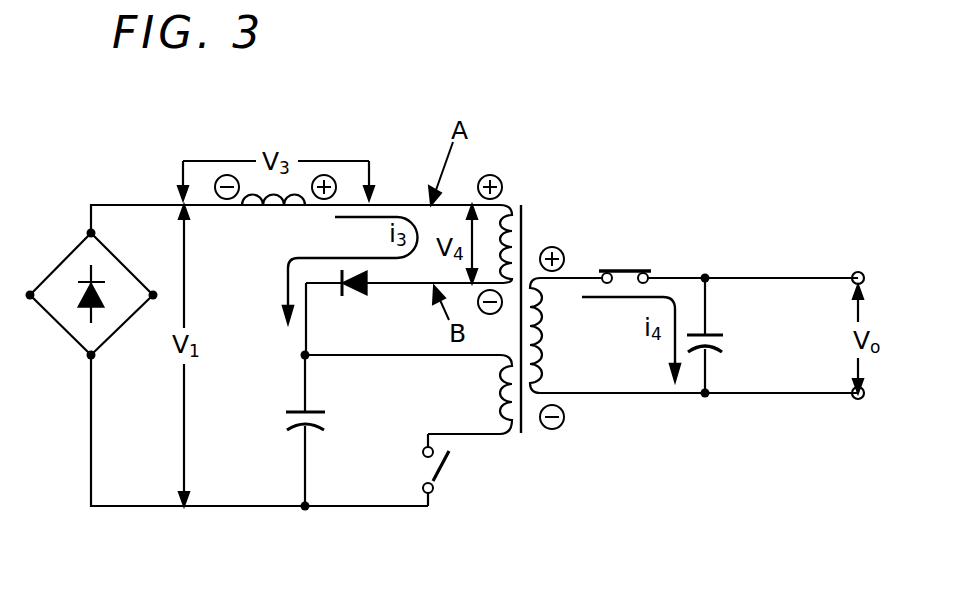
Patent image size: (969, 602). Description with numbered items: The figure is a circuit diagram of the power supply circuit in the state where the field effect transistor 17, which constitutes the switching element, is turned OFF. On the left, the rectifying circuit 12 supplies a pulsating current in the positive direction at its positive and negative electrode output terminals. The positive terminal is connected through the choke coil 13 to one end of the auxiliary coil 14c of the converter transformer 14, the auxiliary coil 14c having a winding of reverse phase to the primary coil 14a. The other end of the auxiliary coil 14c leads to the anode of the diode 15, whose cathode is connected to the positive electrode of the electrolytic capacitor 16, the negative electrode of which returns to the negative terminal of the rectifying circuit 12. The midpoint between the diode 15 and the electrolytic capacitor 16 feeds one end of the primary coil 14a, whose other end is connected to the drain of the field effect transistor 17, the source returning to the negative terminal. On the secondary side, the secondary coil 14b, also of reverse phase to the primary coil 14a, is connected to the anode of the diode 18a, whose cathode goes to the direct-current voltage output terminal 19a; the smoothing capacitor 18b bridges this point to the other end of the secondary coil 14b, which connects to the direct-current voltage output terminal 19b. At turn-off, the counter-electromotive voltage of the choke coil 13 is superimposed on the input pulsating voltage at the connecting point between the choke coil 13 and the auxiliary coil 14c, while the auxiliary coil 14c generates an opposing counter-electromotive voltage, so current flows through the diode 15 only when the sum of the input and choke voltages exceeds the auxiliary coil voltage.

The rectifying circuit 12 is at (78, 265).
The choke coil 13 is at (273, 218).
The converter transformer 14 is at (525, 198).
The primary coil 14a is at (496, 388).
The secondary coil 14b is at (552, 345).
The auxiliary coil 14c is at (512, 200).
The diode 15 is at (348, 298).
The electrolytic capacitor 16 is at (281, 414).
The field effect transistor 17 is at (447, 473).
The diode 18a is at (630, 262).
The smoothing capacitor 18b is at (728, 345).
The direct-current voltage output terminal 19a is at (857, 270).
The direct-current voltage output terminal 19b is at (857, 401).